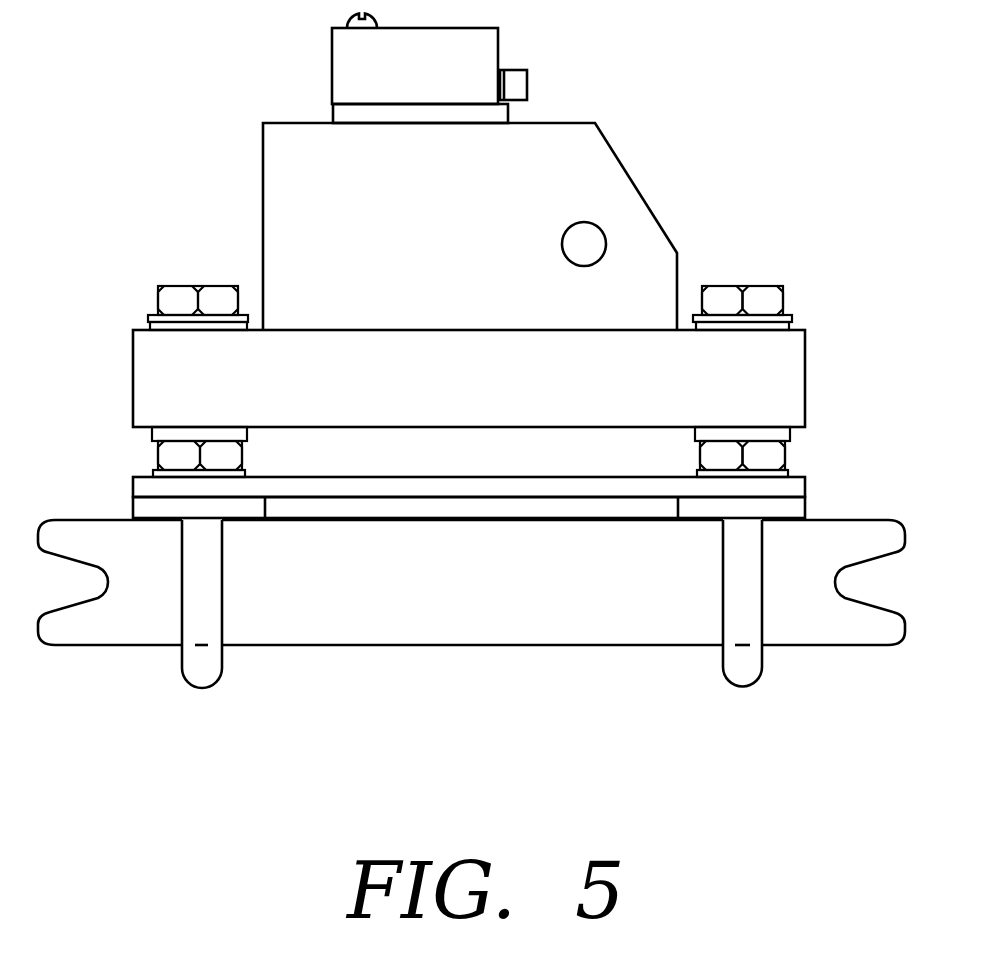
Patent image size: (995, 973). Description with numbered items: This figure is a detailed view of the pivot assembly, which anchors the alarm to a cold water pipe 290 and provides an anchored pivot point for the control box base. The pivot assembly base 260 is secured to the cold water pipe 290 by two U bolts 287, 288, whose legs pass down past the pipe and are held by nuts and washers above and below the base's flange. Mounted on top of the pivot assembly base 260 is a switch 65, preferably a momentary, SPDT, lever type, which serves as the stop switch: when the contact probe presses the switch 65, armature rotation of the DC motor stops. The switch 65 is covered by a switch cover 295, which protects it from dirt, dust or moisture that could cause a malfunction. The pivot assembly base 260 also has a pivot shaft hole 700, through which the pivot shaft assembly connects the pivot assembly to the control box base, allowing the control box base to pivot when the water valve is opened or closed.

The switch cover 295 is at (355, 83).
The switch 65 is at (527, 83).
The pivot assembly base 260 is at (277, 270).
The pivot shaft hole 700 is at (573, 252).
The cold water pipe 290 is at (453, 638).
The U bolt 288 is at (205, 673).
The U bolt 287 is at (745, 665).